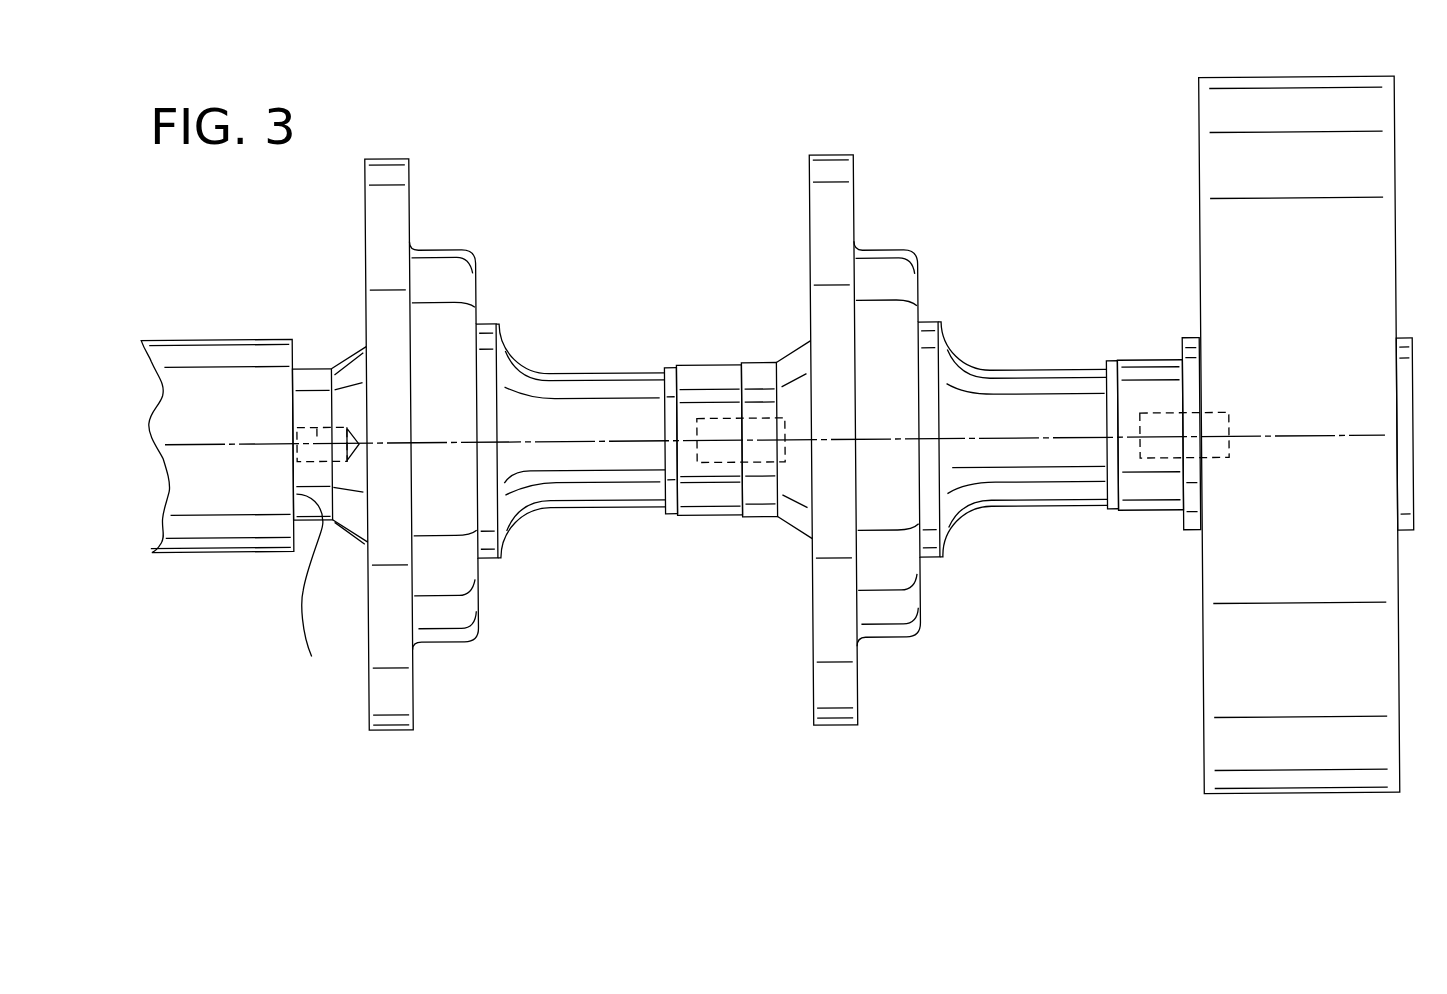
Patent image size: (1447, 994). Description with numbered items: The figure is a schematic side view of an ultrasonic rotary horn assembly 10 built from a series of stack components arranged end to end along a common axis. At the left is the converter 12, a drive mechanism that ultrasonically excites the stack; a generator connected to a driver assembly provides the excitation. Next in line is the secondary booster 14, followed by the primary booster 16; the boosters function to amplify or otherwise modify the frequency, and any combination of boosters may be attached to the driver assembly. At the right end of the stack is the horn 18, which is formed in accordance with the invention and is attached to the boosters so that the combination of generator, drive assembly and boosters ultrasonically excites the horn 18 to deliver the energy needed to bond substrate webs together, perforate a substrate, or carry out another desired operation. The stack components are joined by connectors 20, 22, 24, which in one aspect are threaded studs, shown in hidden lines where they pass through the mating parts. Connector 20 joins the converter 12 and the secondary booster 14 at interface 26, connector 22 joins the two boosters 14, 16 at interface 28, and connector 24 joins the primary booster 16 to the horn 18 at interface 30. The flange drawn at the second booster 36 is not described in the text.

The ultrasonic rotary horn assembly 10 is at (990, 170).
The converter 12 is at (189, 336).
The secondary booster 14 is at (358, 348).
The primary booster 16 is at (1016, 371).
The horn 18 is at (1327, 800).
The connector 20 is at (314, 424).
The connector 22 is at (709, 432).
The connector 24 is at (1168, 429).
The interface 26 is at (322, 598).
The interface 28 is at (743, 487).
The interface 30 is at (1200, 493).
The second flange 36 is at (833, 154).